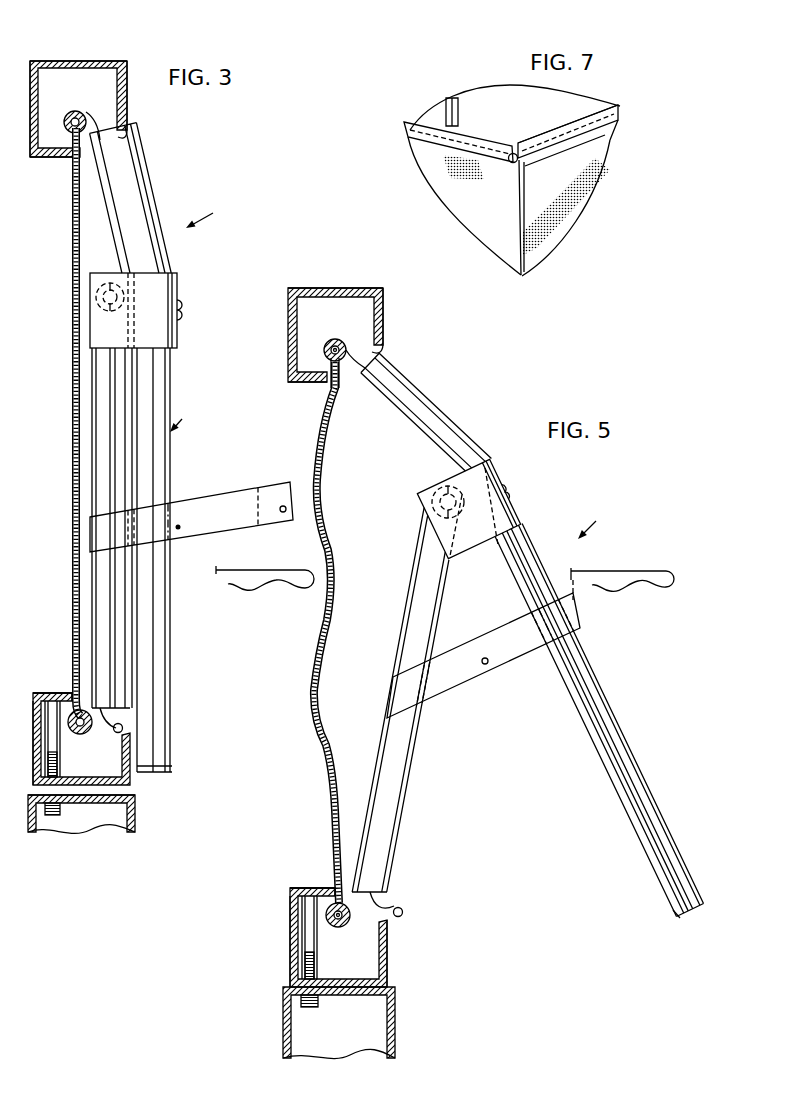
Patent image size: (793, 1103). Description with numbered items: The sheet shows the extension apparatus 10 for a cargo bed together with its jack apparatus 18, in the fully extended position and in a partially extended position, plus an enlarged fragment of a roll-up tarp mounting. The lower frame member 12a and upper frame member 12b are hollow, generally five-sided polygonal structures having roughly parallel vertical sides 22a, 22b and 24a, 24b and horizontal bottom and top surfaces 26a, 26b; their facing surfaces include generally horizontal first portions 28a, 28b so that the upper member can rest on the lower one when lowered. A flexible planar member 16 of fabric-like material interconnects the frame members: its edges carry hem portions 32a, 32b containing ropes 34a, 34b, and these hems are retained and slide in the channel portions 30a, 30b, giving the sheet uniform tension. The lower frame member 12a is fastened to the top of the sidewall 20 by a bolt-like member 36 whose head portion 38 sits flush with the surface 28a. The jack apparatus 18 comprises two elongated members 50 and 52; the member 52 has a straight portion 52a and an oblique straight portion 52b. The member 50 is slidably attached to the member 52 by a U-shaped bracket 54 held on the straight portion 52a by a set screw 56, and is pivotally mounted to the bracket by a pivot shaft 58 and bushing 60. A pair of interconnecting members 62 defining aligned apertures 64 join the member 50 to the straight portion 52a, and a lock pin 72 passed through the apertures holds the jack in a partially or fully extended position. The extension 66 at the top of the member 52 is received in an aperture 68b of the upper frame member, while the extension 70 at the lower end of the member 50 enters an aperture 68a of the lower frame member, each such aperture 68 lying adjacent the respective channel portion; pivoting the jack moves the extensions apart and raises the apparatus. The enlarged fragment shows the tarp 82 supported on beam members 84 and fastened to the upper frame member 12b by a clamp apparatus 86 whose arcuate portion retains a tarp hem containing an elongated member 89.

In FIG. 3, the extension apparatus 10 is at (213, 215).
In FIG. 5, the extension apparatus 10 is at (600, 520).
In FIG. 3, the lower frame member 12a is at (128, 783).
In FIG. 5, the lower frame member 12a is at (296, 960).
In FIG. 3, the upper frame member 12b is at (102, 60).
In FIG. 5, the upper frame member 12b is at (303, 290).
In FIG. 7, the upper frame member 12b is at (445, 147).
In FIG. 3, the flexible planar member 16 is at (74, 392).
In FIG. 5, the flexible planar member 16 is at (330, 636).
In FIG. 7, the flexible planar member 16 is at (478, 197).
In FIG. 3, the jack apparatus 18 is at (188, 419).
In FIG. 3, the sidewall 20 is at (137, 832).
In FIG. 5, the sidewall 20 is at (286, 1024).
In FIG. 3, the vertical side of lower frame member 22a is at (36, 765).
In FIG. 5, the vertical side of lower frame member 22a is at (292, 924).
In FIG. 3, the vertical side of upper frame member 22b is at (33, 75).
In FIG. 5, the vertical side of lower frame member 24a is at (388, 961).
In FIG. 3, the vertical side of upper frame member 24b is at (125, 82).
In FIG. 5, the vertical side of upper frame member 24b is at (383, 312).
In FIG. 3, the horizontal bottom surface 26a is at (105, 790).
In FIG. 3, the horizontal top surface 26b is at (76, 60).
In FIG. 5, the horizontal top surface 26b is at (350, 290).
In FIG. 3, the first portion of facing surface 28a is at (70, 697).
In FIG. 5, the first portion of facing surface 28a is at (326, 888).
In FIG. 3, the first portion of facing surface 28b is at (52, 160).
In FIG. 5, the first portion of facing surface 28b is at (306, 382).
In FIG. 5, the channel portion 30a is at (337, 928).
In FIG. 5, the channel portion 30b is at (333, 346).
In FIG. 3, the hem portion 32a is at (86, 735).
In FIG. 5, the hem portion 32a is at (347, 923).
In FIG. 3, the hem portion 32b is at (70, 114).
In FIG. 5, the hem portion 32b is at (350, 337).
In FIG. 5, the rope 34a is at (334, 917).
In FIG. 5, the rope 34b is at (326, 350).
In FIG. 3, the bolt-like member 36 is at (56, 760).
In FIG. 5, the bolt-like member 36 is at (318, 1003).
In FIG. 3, the head portion 38 is at (37, 694).
In FIG. 5, the head portion 38 is at (299, 887).
In FIG. 3, the elongated member 50 is at (105, 622).
In FIG. 5, the elongated member 50 is at (410, 634).
In FIG. 3, the elongated member 52 is at (160, 478).
In FIG. 5, the elongated member 52 is at (530, 570).
In FIG. 3, the first straight portion 52a is at (170, 642).
In FIG. 5, the first straight portion 52a is at (604, 716).
In FIG. 3, the second straight portion 52b is at (140, 192).
In FIG. 5, the second straight portion 52b is at (447, 413).
In FIG. 3, the U-shaped bracket 54 is at (160, 283).
In FIG. 5, the U-shaped bracket 54 is at (478, 472).
In FIG. 3, the set screw 56 is at (183, 316).
In FIG. 5, the set screw 56 is at (517, 495).
In FIG. 3, the pivot shaft 58 is at (112, 282).
In FIG. 5, the pivot shaft 58 is at (443, 488).
In FIG. 3, the bushing 60 is at (100, 300).
In FIG. 5, the bushing 60 is at (436, 509).
In FIG. 3, the interconnecting elongated members 62 is at (238, 497).
In FIG. 5, the interconnecting elongated members 62 is at (465, 650).
In FIG. 3, the apertures 64 is at (215, 568).
In FIG. 5, the apertures 64 is at (487, 665).
In FIG. 3, the extension 66 is at (100, 120).
In FIG. 5, the extension 66 is at (362, 370).
In FIG. 5, the aperture 68 is at (390, 913).
In FIG. 3, the aperture 68a is at (124, 728).
In FIG. 3, the aperture 68b is at (122, 112).
In FIG. 5, the aperture 68b is at (376, 343).
In FIG. 3, the extension 70 is at (104, 720).
In FIG. 5, the extension 70 is at (374, 906).
In FIG. 3, the lock pin 72 is at (265, 588).
In FIG. 5, the lock pin 72 is at (660, 592).
In FIG. 7, the tarp 82 is at (497, 97).
In FIG. 7, the beam members 84 is at (608, 120).
In FIG. 7, the clamp apparatus 86 is at (448, 100).
In FIG. 7, the elongated member 89 is at (513, 165).